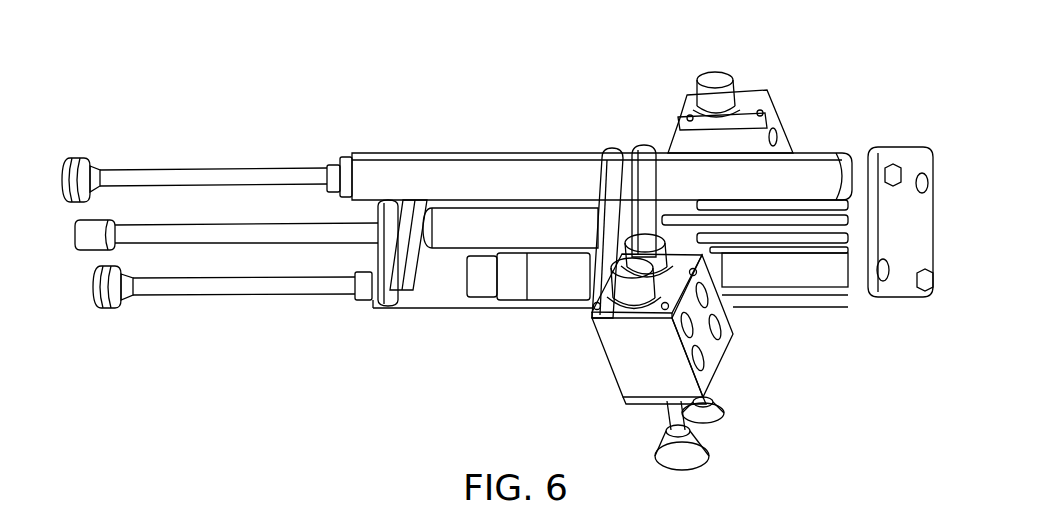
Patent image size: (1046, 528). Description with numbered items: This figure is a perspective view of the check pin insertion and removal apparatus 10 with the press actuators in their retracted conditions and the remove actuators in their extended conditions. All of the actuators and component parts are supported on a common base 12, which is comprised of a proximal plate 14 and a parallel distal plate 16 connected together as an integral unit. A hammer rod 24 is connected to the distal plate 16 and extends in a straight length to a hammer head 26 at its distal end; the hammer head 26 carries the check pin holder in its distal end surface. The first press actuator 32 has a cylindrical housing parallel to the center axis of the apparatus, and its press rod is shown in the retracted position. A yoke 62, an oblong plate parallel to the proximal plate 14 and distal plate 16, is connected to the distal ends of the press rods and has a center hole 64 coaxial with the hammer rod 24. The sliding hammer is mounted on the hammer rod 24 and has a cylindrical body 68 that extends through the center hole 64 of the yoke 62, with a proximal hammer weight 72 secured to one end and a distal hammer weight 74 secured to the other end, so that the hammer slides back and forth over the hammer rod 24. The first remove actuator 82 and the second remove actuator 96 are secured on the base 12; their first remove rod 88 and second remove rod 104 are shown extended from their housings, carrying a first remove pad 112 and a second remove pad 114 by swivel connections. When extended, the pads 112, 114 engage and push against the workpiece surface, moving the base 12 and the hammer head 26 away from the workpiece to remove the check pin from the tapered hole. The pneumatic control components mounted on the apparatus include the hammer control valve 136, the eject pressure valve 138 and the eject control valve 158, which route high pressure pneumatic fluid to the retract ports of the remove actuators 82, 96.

The check pin insertion and removal apparatus 10 is at (497, 55).
The base 12 is at (865, 128).
The proximal plate 14 is at (905, 283).
The distal plate 16 is at (644, 152).
The hammer rod 24 is at (198, 232).
The hammer head 26 is at (100, 232).
The first press actuator 32 is at (575, 272).
The yoke 62 is at (372, 290).
The center hole 64 is at (405, 262).
The cylindrical body 68 is at (548, 228).
The proximal hammer weight 72 is at (612, 215).
The distal hammer weight 74 is at (388, 250).
The first remove actuator 82 is at (436, 295).
The first remove rod 88 is at (248, 292).
The second remove actuator 96 is at (452, 180).
The second remove rod 104 is at (193, 170).
The first remove pad 112 is at (102, 307).
The second remove pad 114 is at (75, 160).
The hammer control valve 136 is at (715, 382).
The eject pressure valve 138 is at (725, 325).
The eject control valve 158 is at (773, 115).